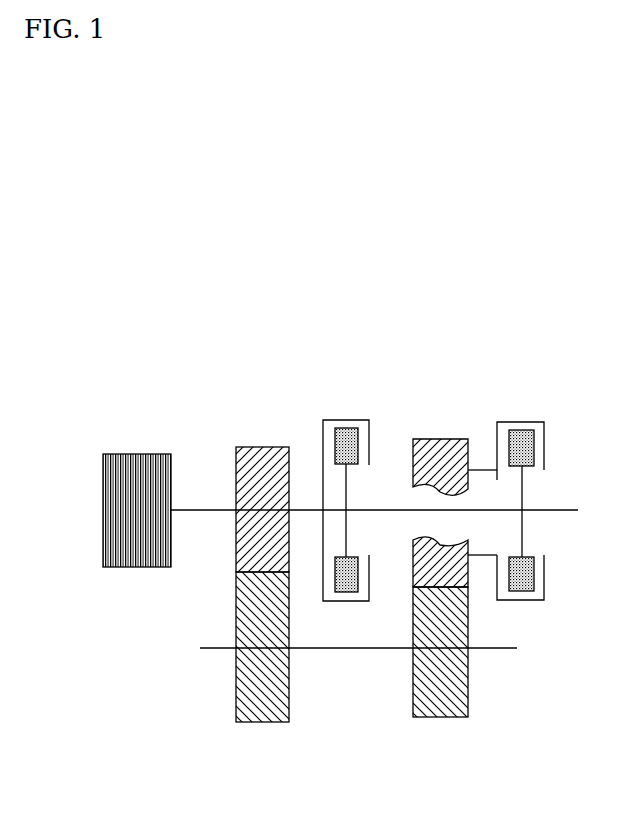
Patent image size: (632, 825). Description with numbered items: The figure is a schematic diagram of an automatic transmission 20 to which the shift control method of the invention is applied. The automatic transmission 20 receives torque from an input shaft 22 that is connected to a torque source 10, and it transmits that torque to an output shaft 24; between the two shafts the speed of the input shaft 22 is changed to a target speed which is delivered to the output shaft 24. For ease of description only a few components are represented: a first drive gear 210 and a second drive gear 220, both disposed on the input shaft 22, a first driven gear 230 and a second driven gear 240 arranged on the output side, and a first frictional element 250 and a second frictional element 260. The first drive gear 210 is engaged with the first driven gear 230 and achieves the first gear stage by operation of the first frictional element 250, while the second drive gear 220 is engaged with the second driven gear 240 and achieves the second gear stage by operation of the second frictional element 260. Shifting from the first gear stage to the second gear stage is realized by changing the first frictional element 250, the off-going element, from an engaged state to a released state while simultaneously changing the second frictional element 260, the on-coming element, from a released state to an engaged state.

The torque source 10 is at (115, 452).
The automatic transmission 20 is at (401, 404).
The input shaft 22 is at (200, 508).
The output shaft 24 is at (517, 648).
The first drive gear 210 is at (448, 438).
The second drive gear 220 is at (261, 446).
The first driven gear 230 is at (438, 717).
The second driven gear 240 is at (262, 722).
The first frictional element 250 is at (348, 419).
The second frictional element 260 is at (526, 421).